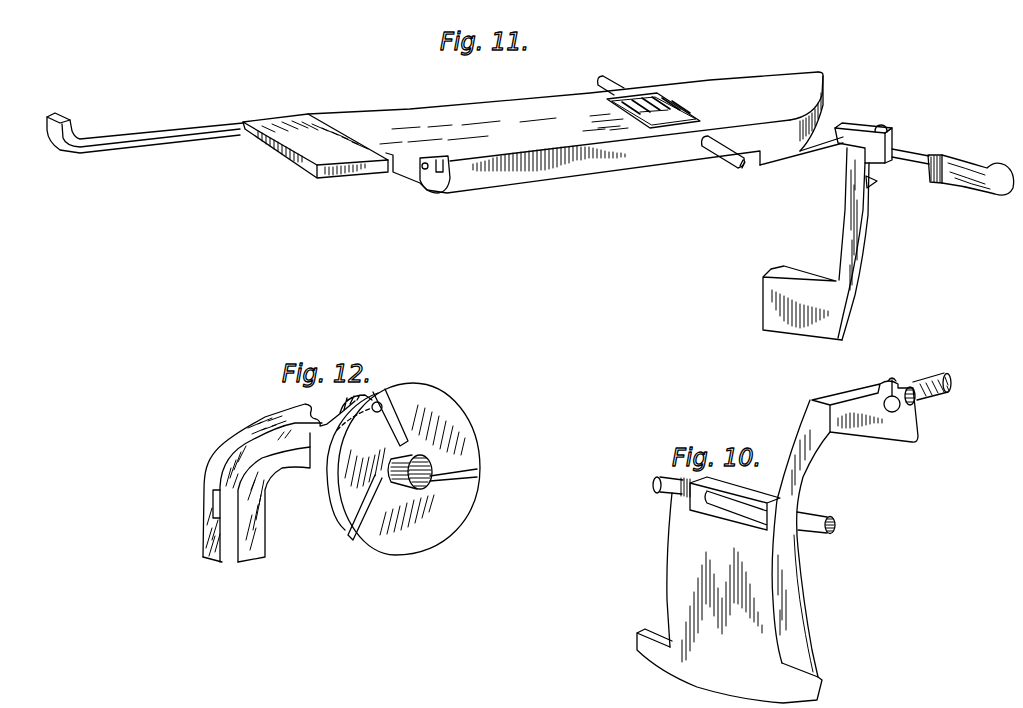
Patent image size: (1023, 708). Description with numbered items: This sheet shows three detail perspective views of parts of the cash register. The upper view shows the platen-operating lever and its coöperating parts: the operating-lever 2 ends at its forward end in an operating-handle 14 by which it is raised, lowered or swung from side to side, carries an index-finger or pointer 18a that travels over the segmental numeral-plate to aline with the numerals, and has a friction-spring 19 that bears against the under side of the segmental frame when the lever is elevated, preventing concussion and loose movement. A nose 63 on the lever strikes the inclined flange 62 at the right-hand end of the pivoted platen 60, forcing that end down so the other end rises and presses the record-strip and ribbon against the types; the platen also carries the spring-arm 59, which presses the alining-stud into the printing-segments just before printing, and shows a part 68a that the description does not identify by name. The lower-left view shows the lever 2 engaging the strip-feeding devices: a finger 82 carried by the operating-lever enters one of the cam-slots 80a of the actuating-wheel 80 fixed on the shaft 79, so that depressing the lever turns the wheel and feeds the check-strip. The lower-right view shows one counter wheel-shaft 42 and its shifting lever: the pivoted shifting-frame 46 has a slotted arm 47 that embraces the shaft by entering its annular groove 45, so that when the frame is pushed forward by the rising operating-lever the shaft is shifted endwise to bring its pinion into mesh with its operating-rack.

In FIG. 11, the spring-arm 59 is at (185, 120).
In FIG. 11, the platen 60 is at (533, 132).
In FIG. 11, the slot in table plate 68a is at (662, 127).
In FIG. 11, the flange 62 is at (836, 126).
In FIG. 11, the friction-spring 19 is at (888, 133).
In FIG. 11, the nose 63 is at (834, 150).
In FIG. 11, the operating-lever 2 is at (867, 222).
In FIG. 12, the operating-lever 2 is at (242, 432).
In FIG. 11, the index-finger or pointer 18a is at (875, 185).
In FIG. 11, the operating-handle 14 is at (980, 168).
In FIG. 12, the actuating-wheel 80 is at (435, 530).
In FIG. 12, the finger 82 is at (398, 416).
In FIG. 12, the cam-slots 80a is at (348, 531).
In FIG. 12, the shaft 79 is at (398, 484).
In FIG. 10, the shifting-frame 46 is at (736, 551).
In FIG. 10, the slotted arm 47 is at (857, 398).
In FIG. 10, the annular groove 45 is at (894, 381).
In FIG. 10, the shaft 42 is at (940, 377).